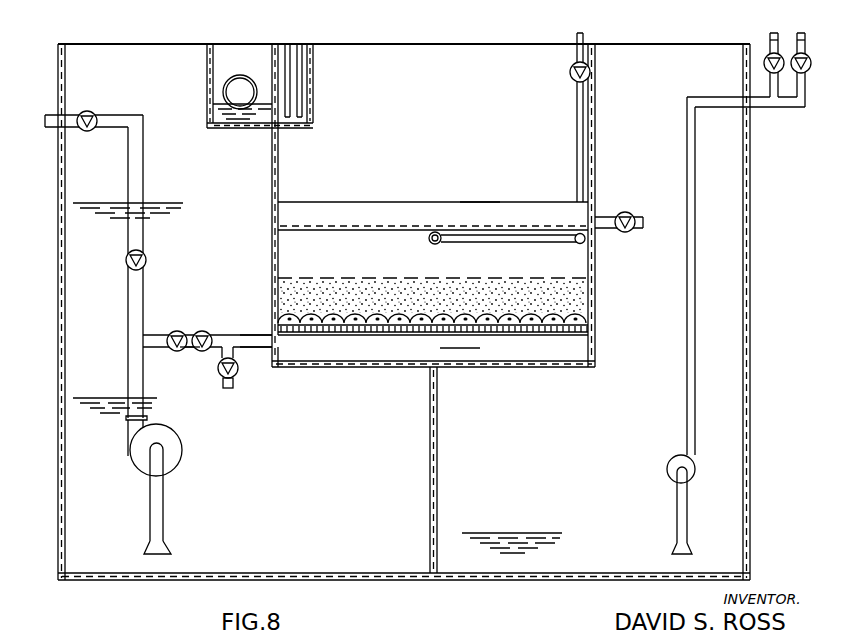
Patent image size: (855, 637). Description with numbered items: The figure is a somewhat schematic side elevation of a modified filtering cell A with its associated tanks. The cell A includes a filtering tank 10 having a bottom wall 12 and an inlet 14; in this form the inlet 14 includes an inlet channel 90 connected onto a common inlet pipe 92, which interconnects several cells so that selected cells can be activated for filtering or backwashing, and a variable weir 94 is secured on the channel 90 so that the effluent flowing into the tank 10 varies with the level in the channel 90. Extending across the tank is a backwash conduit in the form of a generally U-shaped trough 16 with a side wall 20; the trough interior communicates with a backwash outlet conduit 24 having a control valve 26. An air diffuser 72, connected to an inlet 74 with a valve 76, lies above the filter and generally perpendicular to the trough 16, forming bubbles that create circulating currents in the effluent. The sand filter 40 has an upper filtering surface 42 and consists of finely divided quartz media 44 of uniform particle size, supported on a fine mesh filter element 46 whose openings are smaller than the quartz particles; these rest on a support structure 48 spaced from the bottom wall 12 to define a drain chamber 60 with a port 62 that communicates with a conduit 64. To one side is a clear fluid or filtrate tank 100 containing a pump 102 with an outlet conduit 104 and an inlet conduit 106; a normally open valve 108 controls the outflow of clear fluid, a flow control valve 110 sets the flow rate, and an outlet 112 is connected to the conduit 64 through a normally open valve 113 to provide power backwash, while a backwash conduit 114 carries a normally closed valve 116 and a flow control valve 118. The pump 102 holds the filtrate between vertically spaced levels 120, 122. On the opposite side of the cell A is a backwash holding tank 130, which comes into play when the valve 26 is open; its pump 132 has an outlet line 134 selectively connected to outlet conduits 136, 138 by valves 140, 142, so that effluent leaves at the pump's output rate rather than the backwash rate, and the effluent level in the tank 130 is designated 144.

The filtering cell A is at (477, 47).
The filtering tank 10 is at (595, 110).
The bottom wall 12 is at (524, 368).
The inlet 14 is at (313, 74).
The U-shape trough 16 is at (415, 203).
The side wall 20 is at (473, 207).
The backwash outlet conduit 24 is at (605, 217).
The control valve 26 is at (622, 233).
The sand filter 40 is at (443, 300).
The upper filtering surface 42 is at (361, 277).
The media 44 is at (586, 293).
The fine mesh filter element 46 is at (591, 318).
The support structure 48 is at (568, 335).
The drain chamber 60 is at (460, 347).
The port 62 is at (280, 342).
The conduit 64 is at (255, 334).
The air diffuser 72 is at (430, 244).
The inlet 74 is at (545, 242).
The valve 76 is at (570, 72).
The inlet channel 90 is at (207, 78).
The common inlet pipe 92 is at (238, 80).
The variable weir 94 is at (292, 108).
The filtrate tank 100 is at (98, 46).
The pump 102 is at (182, 450).
The outlet conduit 104 is at (144, 181).
The inlet conduit 106 is at (164, 505).
The normally open valve 108 is at (88, 111).
The flow control valve 110 is at (147, 260).
The outlet 112 is at (226, 389).
The normally open valve 113 is at (237, 372).
The backwash conduit 114 is at (187, 352).
The normally closed valve 116 is at (204, 331).
The flow control valve 118 is at (177, 331).
The level 120 is at (100, 398).
The level 122 is at (117, 203).
The backwash holding tank 130 is at (678, 46).
The pump 132 is at (667, 475).
The outlet line 134 is at (687, 382).
The outlet conduit 136 is at (767, 40).
The outlet conduit 138 is at (808, 40).
The valve 140 is at (765, 55).
The valve 142 is at (810, 55).
The level 144 is at (490, 533).